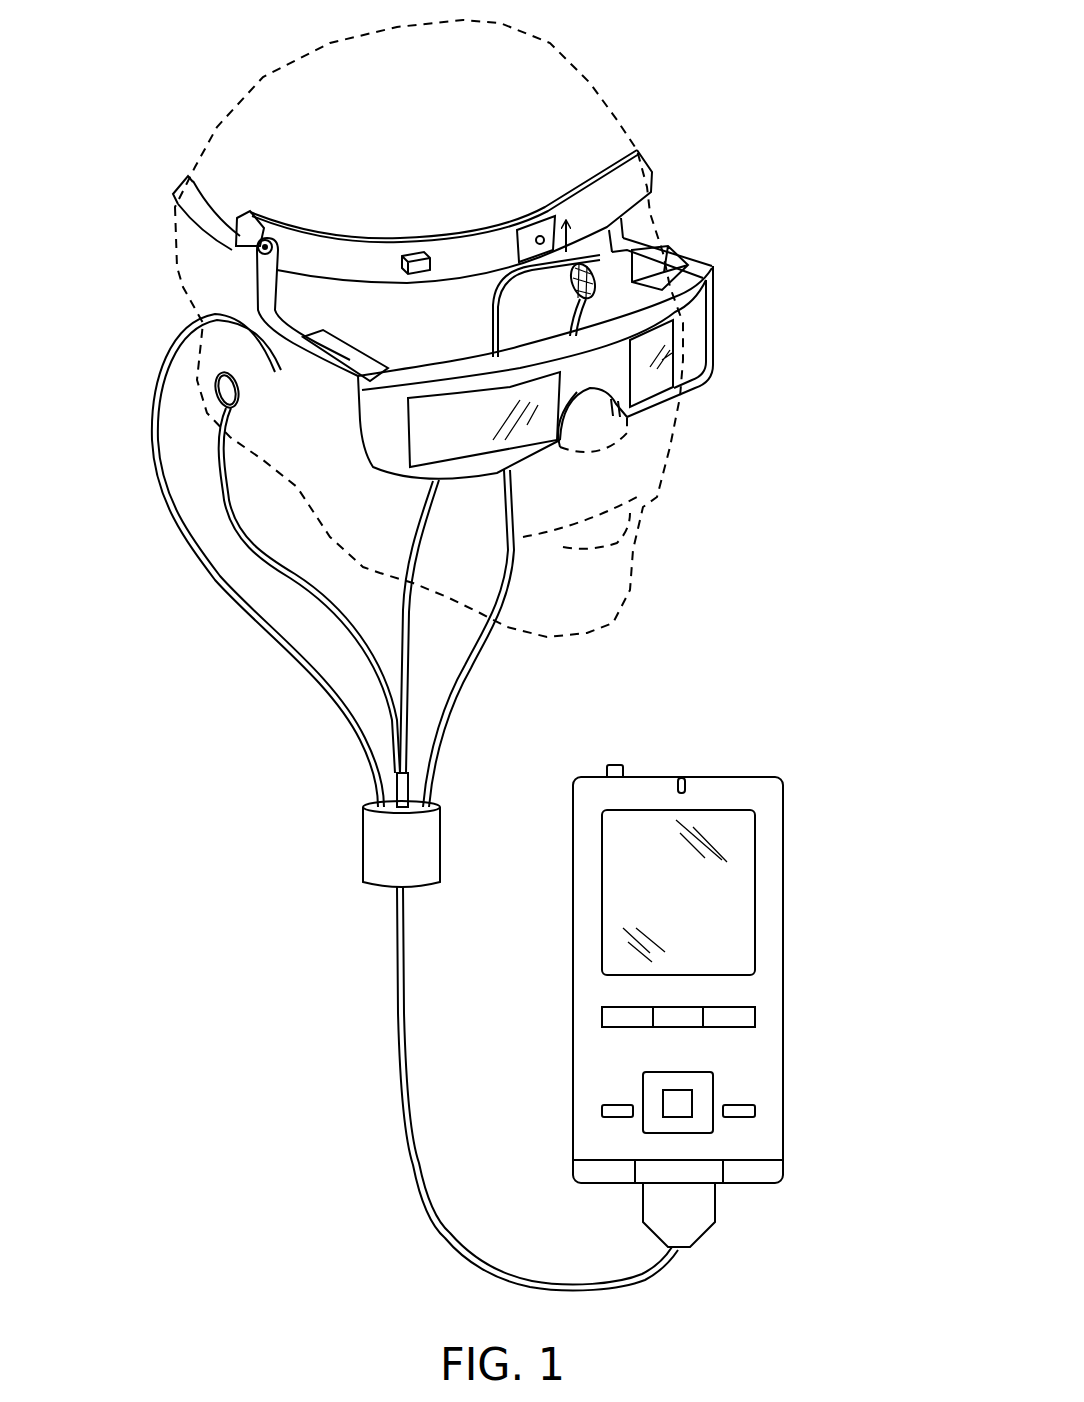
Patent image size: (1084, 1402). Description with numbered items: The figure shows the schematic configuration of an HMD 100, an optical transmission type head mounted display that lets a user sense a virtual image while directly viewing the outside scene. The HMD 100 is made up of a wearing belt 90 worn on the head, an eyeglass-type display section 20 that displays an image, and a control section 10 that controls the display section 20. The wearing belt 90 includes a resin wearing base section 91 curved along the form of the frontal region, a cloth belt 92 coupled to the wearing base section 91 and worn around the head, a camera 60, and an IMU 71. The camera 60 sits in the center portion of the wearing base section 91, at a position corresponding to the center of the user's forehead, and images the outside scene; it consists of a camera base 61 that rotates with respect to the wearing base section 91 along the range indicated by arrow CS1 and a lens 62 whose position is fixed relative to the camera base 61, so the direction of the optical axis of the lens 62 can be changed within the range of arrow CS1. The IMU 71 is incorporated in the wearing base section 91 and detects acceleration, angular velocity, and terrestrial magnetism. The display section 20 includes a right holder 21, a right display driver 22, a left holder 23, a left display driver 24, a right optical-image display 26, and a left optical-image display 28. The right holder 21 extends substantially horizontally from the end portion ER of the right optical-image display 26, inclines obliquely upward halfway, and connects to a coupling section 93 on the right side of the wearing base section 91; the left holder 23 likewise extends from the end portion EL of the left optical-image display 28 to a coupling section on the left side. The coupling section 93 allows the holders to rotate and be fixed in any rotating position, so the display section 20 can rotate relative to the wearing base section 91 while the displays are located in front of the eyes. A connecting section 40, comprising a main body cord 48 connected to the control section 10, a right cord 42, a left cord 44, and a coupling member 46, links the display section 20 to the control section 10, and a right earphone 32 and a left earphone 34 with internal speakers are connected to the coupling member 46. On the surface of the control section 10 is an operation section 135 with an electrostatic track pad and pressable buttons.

The HMD 100 is at (795, 62).
The control section 10 is at (770, 752).
The display section 20 is at (722, 257).
The right holder 21 is at (305, 407).
The right display driver 22 is at (345, 345).
The left holder 23 is at (692, 247).
The left display driver 24 is at (652, 250).
The right optical-image display 26 is at (462, 453).
The left optical-image display 28 is at (690, 365).
The right earphone 32 is at (220, 390).
The left earphone 34 is at (568, 290).
The connecting section 40 is at (467, 792).
The right cord 42 is at (255, 623).
The left cord 44 is at (478, 652).
The coupling member 46 is at (427, 845).
The main body cord 48 is at (402, 1048).
The camera 60 is at (531, 177).
The camera base 61 is at (510, 228).
The lens 62 is at (538, 237).
The IMU 71 is at (413, 247).
The wearing belt 90 is at (650, 157).
The wearing base section 91 is at (602, 192).
The belt 92 is at (193, 184).
The coupling section 93 is at (256, 247).
The operation section 135 is at (757, 992).
The arrow CS1 is at (568, 232).
The end portion ER is at (380, 460).
The end portion EL is at (712, 313).